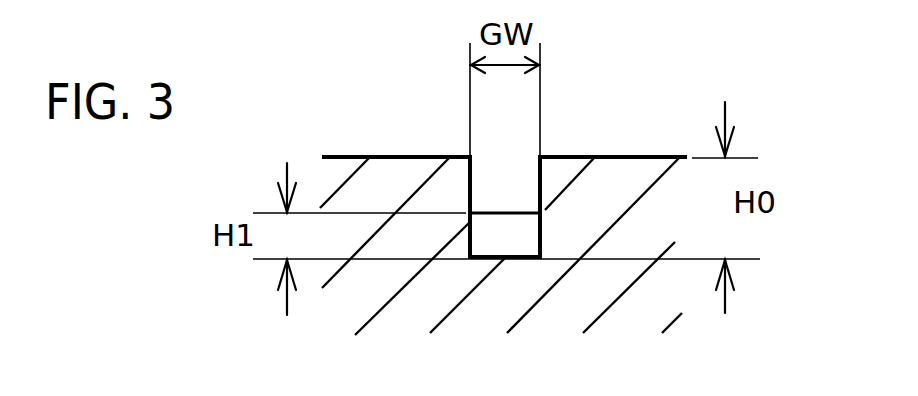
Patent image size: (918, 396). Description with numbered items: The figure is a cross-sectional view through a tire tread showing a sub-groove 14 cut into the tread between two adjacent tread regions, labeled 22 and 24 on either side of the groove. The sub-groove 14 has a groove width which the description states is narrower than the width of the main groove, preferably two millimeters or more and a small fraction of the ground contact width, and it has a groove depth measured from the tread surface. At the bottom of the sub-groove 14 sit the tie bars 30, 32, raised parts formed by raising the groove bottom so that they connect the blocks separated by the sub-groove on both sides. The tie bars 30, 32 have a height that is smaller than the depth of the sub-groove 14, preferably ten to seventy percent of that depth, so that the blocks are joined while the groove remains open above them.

The sub-groove 14 is at (509, 188).
The semiconductor substrate 22 is at (620, 158).
The epitaxial layer 24 is at (397, 156).
The tie bar 30 is at (498, 233).
The tie bar 32 is at (498, 233).